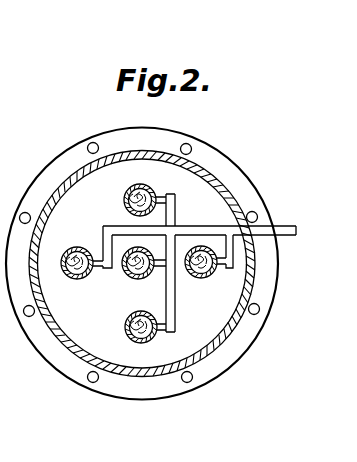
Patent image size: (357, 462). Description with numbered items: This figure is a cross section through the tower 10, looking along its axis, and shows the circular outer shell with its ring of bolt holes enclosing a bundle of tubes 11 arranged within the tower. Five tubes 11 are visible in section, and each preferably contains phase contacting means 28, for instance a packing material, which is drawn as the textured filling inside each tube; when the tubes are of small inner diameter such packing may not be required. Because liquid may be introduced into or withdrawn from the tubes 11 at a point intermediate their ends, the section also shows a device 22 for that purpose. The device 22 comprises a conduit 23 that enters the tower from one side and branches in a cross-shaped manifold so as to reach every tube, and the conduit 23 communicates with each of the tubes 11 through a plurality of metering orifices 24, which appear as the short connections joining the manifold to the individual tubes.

The tower 10 is at (122, 384).
The tubes 11 is at (122, 204).
The device 22 is at (283, 225).
The conduit 23 is at (230, 222).
The metering orifices 24 is at (162, 196).
The phase contacting means 28 is at (144, 184).